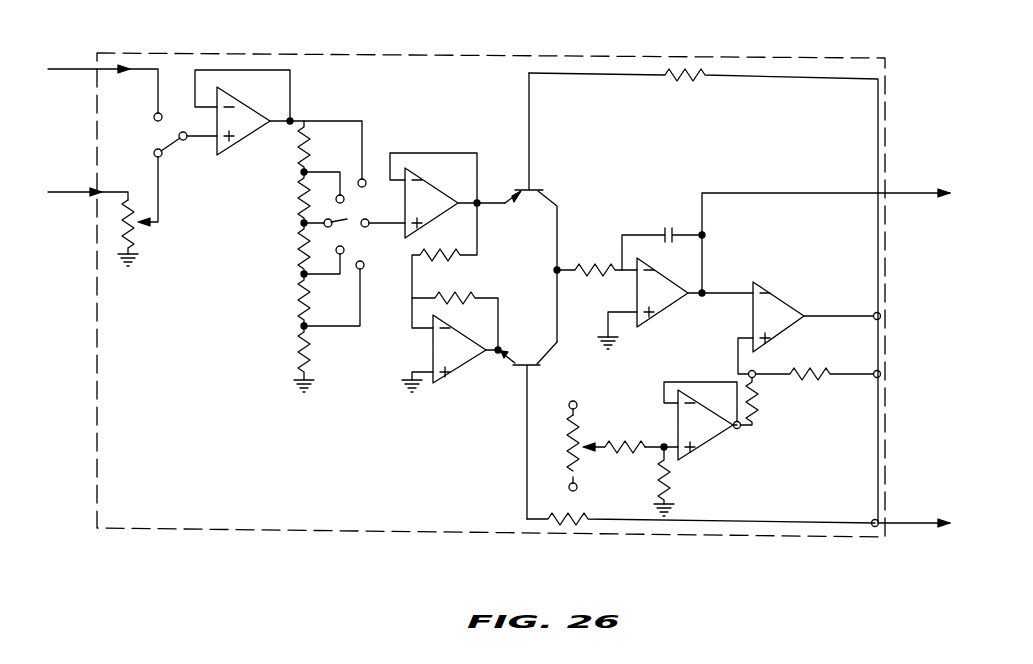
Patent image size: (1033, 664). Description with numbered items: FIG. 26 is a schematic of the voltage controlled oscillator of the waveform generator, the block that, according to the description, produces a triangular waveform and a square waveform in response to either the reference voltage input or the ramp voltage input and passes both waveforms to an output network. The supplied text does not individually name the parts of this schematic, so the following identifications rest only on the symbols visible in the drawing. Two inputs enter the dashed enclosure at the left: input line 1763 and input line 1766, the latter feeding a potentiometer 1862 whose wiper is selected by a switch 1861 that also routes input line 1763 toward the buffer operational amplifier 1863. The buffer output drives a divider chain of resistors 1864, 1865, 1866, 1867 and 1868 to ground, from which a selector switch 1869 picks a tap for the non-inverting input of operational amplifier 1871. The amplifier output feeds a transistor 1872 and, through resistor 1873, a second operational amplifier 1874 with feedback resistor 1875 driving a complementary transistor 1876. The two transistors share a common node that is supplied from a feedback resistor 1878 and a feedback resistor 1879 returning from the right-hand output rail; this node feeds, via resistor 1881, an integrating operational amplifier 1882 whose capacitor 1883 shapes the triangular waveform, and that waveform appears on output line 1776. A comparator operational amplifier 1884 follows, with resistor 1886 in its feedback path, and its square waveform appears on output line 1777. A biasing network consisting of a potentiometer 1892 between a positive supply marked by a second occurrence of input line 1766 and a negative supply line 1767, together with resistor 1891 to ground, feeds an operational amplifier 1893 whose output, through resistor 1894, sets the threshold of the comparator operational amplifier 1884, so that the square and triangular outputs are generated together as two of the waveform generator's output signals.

The first input line 1763 is at (74, 69).
The second input line 1766 is at (70, 191).
The negative supply line 1767 is at (580, 489).
The first output line 1776 is at (900, 196).
The second output line 1777 is at (898, 526).
The switch 1861 is at (174, 140).
The potentiometer 1862 is at (136, 230).
The operational amplifier 1863 is at (262, 127).
The resistor 1864 is at (324, 146).
The resistor 1865 is at (300, 198).
The resistor 1866 is at (300, 250).
The resistor 1867 is at (300, 300).
The resistor 1868 is at (300, 350).
The selector switch 1869 is at (347, 219).
The operational amplifier 1871 is at (457, 186).
The transistor 1872 is at (540, 191).
The resistor 1873 is at (462, 260).
The operational amplifier 1874 is at (433, 352).
The resistor 1875 is at (439, 298).
The transistor 1876 is at (515, 365).
The resistor 1878 is at (675, 82).
The resistor 1879 is at (571, 525).
The resistor 1881 is at (598, 268).
The operational amplifier 1882 is at (665, 318).
The capacitor 1883 is at (660, 229).
The operational amplifier 1884 is at (786, 334).
The resistor 1886 is at (810, 380).
The resistor 1891 is at (669, 475).
The potentiometer 1892 is at (634, 450).
The operational amplifier 1893 is at (709, 438).
The resistor 1894 is at (760, 398).